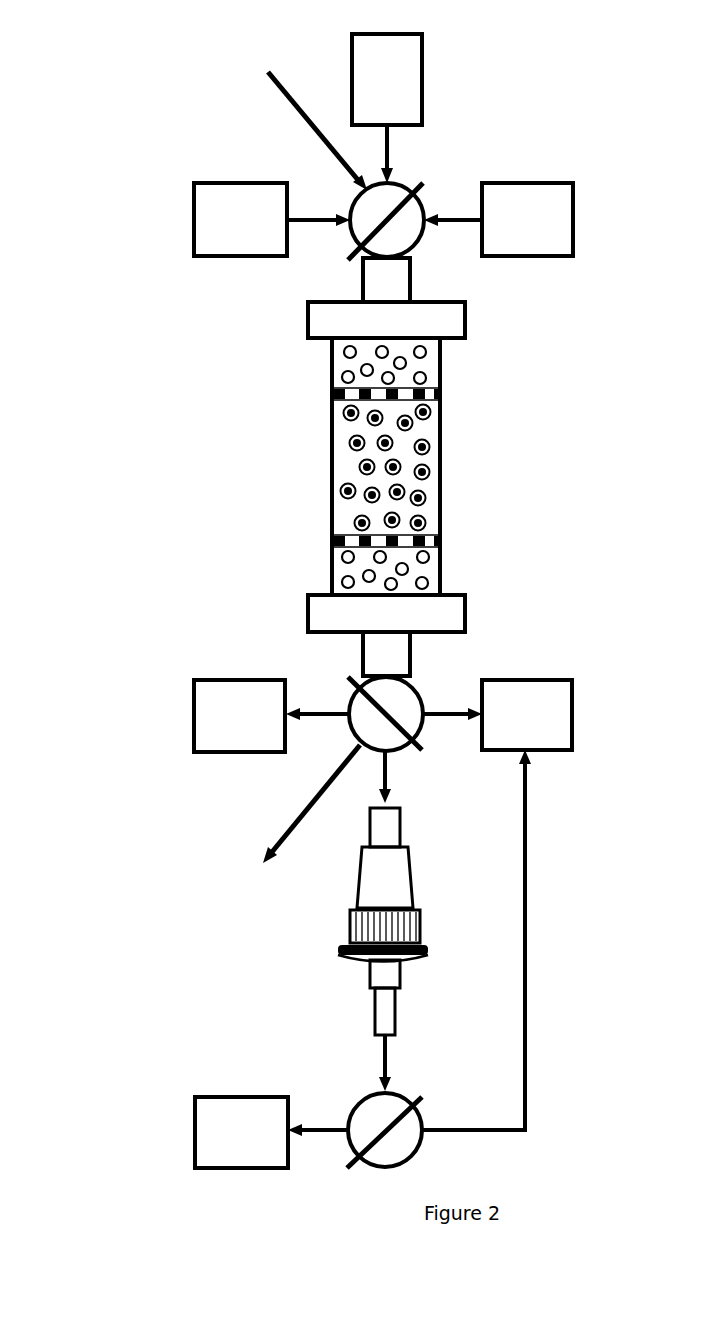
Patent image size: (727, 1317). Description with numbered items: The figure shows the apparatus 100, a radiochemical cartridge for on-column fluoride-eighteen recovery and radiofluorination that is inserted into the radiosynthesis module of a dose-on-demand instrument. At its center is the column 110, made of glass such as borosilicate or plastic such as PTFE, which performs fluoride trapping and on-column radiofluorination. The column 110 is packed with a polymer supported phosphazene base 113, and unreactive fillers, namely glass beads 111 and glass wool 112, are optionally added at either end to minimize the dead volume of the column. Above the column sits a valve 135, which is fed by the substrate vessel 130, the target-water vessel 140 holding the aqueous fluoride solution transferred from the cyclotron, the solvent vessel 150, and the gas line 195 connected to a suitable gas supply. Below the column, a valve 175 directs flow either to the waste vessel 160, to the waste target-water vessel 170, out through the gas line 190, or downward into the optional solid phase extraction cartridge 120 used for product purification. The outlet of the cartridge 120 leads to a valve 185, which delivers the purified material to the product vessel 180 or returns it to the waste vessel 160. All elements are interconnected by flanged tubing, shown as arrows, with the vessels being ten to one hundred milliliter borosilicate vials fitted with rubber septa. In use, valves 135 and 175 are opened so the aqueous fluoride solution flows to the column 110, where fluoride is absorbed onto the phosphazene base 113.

The apparatus 100 is at (95, 40).
The column 110 is at (320, 461).
The glass beads 111 is at (337, 352).
The glass wool 112 is at (433, 393).
The polymer supported phosphazene base 113 is at (425, 470).
The solid phase extraction cartridge 120 is at (415, 907).
The substrate vessel 130 is at (387, 108).
The valve 135 is at (410, 187).
The [18O] water vessel 140 is at (272, 219).
The solvent vessel 150 is at (498, 219).
The waste vessel 160 is at (497, 905).
The waste [18O] water vessel 170 is at (271, 716).
The valve 175 is at (413, 683).
The product vessel 180 is at (271, 1132).
The valve 185 is at (400, 1093).
The gas line 190 is at (294, 824).
The gas line 195 is at (301, 113).